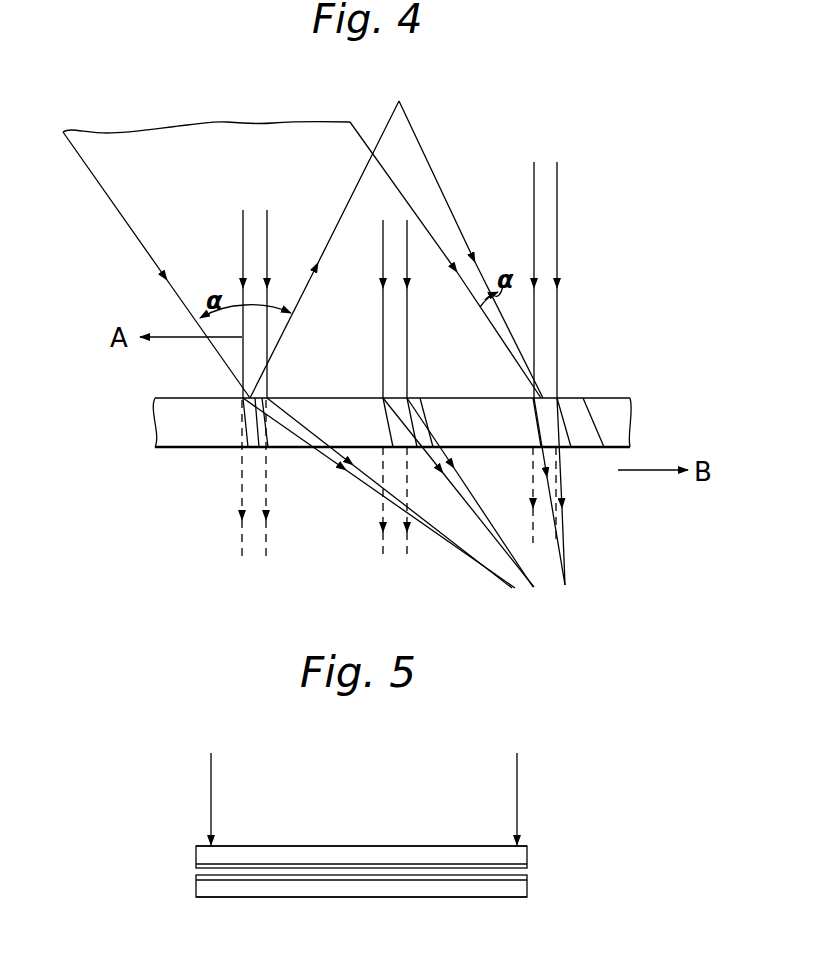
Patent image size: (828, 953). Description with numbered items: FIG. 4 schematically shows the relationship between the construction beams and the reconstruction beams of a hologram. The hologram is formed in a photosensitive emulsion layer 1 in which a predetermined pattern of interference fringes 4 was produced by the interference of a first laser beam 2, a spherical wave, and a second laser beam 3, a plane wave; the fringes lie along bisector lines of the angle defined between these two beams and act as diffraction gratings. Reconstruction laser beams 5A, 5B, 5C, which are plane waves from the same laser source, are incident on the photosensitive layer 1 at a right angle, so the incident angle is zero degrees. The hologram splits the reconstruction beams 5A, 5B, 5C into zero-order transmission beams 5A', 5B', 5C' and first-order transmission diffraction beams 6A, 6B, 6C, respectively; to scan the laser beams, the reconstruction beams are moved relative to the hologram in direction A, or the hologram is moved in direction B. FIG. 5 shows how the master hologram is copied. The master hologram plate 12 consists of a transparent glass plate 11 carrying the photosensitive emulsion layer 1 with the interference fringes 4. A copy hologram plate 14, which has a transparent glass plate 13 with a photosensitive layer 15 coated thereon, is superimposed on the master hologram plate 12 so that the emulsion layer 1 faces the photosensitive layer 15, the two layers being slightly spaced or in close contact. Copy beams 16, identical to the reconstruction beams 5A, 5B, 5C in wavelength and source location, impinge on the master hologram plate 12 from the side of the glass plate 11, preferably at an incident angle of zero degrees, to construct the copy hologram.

In FIG. 4, the photosensitive emulsion layer 1 is at (632, 420).
In FIG. 5, the photosensitive emulsion layer 1 is at (530, 866).
In FIG. 4, the first laser beam 2 is at (423, 170).
In FIG. 4, the second laser beam 3 is at (135, 226).
In FIG. 4, the interference fringes 4 is at (590, 400).
In FIG. 4, the reconstruction laser beam 5A is at (573, 280).
In FIG. 4, the reconstruction laser beam 5B is at (419, 309).
In FIG. 4, the reconstruction laser beam 5C is at (279, 304).
In FIG. 4, the zero-order transmission beam 5A' is at (575, 495).
In FIG. 4, the zero-order transmission beam 5B' is at (366, 502).
In FIG. 4, the zero-order transmission beam 5C' is at (282, 482).
In FIG. 4, the first-order transmission diffraction beam 6A is at (582, 530).
In FIG. 4, the first-order transmission diffraction beam 6B is at (463, 488).
In FIG. 4, the first-order transmission diffraction beam 6C is at (437, 540).
In FIG. 5, the transparent glass plate 11 is at (528, 845).
In FIG. 5, the master hologram plate 12 is at (532, 852).
In FIG. 5, the transparent glass plate 13 is at (481, 900).
In FIG. 5, the copy hologram plate 14 is at (535, 901).
In FIG. 5, the photosensitive layer 15 is at (530, 878).
In FIG. 5, the copy beams 16 is at (508, 771).